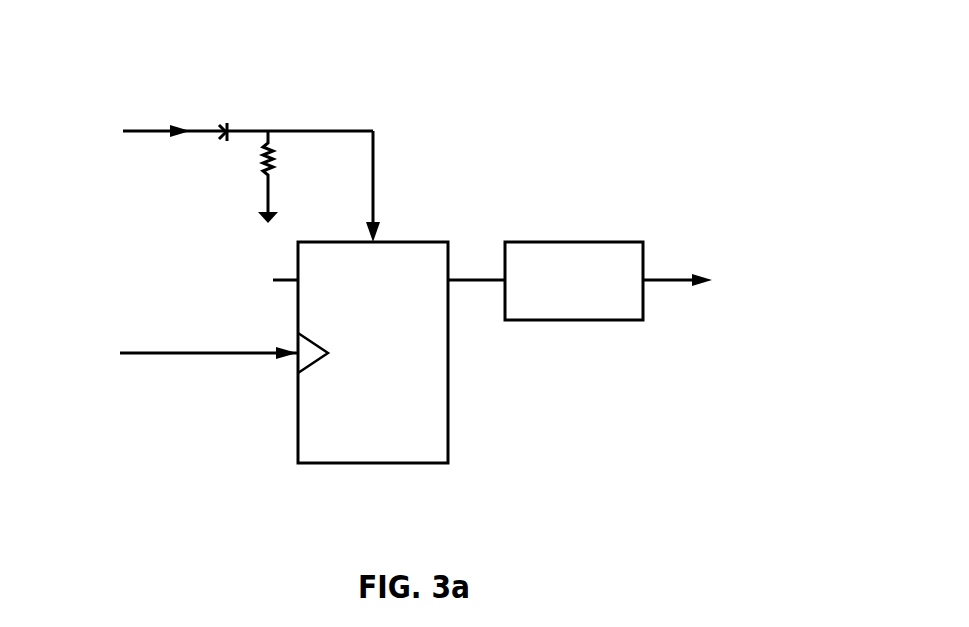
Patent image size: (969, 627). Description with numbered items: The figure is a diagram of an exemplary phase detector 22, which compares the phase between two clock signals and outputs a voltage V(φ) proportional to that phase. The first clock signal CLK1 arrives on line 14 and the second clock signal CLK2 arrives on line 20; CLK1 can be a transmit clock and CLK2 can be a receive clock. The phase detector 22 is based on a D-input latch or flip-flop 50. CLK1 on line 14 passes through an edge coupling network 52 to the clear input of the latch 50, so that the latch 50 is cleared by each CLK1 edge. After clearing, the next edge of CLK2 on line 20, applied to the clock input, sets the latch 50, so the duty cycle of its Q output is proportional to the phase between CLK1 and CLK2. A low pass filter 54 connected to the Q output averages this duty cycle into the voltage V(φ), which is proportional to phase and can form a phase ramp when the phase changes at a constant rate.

The line 14 is at (200, 135).
The line 20 is at (197, 348).
The phase detector 22 is at (570, 110).
The D-input latch 50 is at (292, 400).
The edge coupling network 52 is at (293, 97).
The low pass filter 54 is at (572, 242).